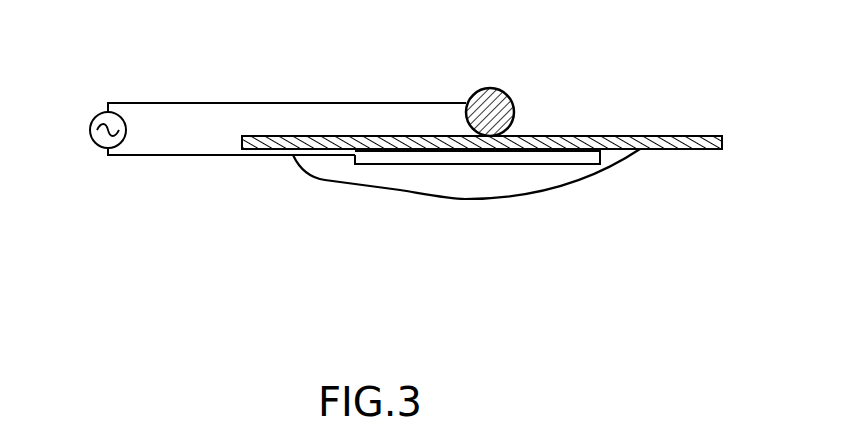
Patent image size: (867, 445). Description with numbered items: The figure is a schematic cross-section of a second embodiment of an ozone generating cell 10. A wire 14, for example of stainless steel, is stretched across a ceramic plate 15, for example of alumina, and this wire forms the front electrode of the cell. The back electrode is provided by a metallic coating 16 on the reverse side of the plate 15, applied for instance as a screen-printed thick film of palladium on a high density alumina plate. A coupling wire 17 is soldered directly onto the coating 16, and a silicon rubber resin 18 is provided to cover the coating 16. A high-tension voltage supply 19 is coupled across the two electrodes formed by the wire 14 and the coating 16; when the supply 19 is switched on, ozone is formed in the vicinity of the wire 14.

The generating cell 10 is at (700, 100).
The wire 14 is at (487, 87).
The ceramic plate 15 is at (703, 152).
The metallic coating 16 is at (565, 158).
The coupling wire 17 is at (245, 157).
The silicon rubber resin 18 is at (478, 176).
The high-tension voltage supply 19 is at (95, 118).